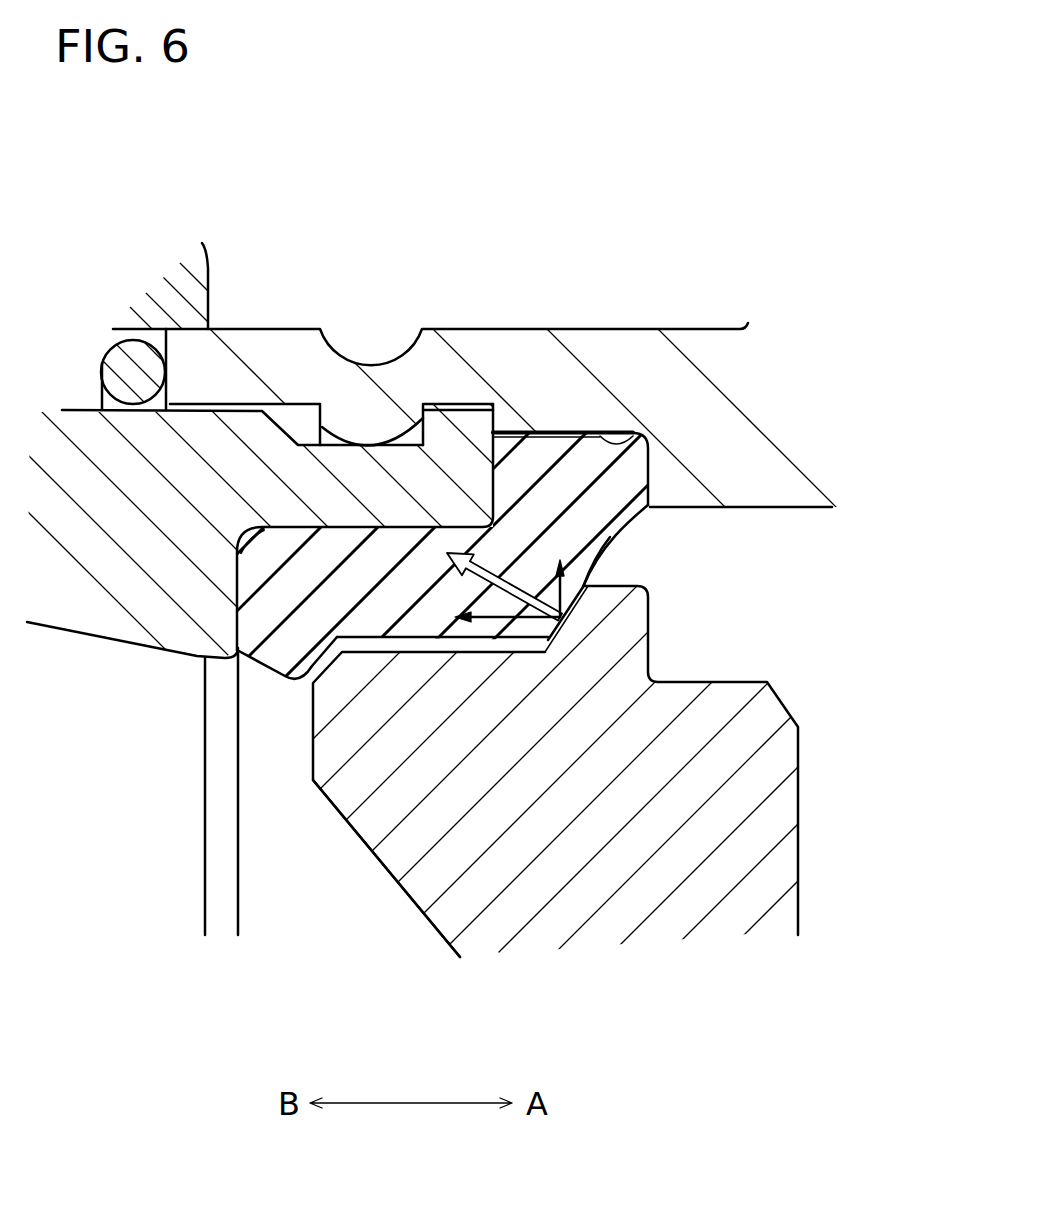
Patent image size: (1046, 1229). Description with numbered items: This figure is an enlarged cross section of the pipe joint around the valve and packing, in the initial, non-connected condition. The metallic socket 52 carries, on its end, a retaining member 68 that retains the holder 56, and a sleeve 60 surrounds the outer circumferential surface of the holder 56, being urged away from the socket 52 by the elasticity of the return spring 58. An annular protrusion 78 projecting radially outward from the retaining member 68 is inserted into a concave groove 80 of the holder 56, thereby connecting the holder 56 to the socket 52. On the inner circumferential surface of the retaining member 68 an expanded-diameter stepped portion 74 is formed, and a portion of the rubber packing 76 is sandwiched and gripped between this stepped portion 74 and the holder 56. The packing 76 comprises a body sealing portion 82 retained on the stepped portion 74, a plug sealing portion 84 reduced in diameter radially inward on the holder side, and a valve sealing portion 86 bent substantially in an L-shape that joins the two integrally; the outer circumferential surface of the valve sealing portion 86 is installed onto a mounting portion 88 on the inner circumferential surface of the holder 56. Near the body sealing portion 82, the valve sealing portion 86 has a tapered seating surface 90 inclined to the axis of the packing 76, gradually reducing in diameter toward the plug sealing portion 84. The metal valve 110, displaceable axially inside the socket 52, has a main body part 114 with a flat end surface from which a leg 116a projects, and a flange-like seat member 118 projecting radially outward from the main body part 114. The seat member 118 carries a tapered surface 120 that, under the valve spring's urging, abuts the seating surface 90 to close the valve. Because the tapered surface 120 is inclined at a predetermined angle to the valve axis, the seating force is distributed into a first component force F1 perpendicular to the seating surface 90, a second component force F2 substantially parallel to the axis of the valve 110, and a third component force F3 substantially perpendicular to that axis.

The socket 52 is at (465, 318).
The holder 56 is at (85, 657).
The return spring 58 is at (112, 373).
The sleeve 60 is at (214, 240).
The retaining member 68 is at (275, 343).
The stepped portion 74 is at (627, 433).
The packing 76 is at (545, 422).
The annular protrusion 78 is at (373, 430).
The concave groove 80 is at (323, 433).
The body sealing portion 82 is at (520, 460).
The plug sealing portion 84 is at (278, 655).
The valve sealing portion 86 is at (400, 642).
The mounting portion 88 is at (390, 548).
The seating surface 90 is at (540, 617).
The valve 110 is at (743, 672).
The main body part 114 is at (705, 822).
The leg 116a is at (410, 832).
The seat member 118 is at (633, 618).
The tapered surface 120 is at (568, 595).
The first component force F1 is at (504, 579).
The second component force F2 is at (532, 630).
The third component force F3 is at (593, 562).